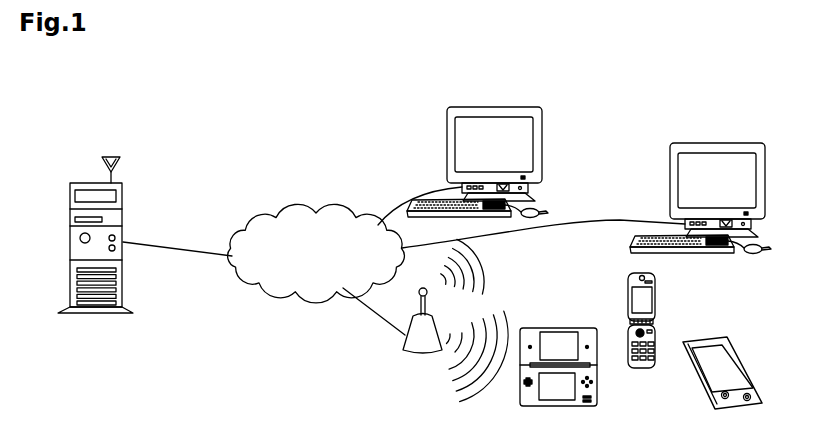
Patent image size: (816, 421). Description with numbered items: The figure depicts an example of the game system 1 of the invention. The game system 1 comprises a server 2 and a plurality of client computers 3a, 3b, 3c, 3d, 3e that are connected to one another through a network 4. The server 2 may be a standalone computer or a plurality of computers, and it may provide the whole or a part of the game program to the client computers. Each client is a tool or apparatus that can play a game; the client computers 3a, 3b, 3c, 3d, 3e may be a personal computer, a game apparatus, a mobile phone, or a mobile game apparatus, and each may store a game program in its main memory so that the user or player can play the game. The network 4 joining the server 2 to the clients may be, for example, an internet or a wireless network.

The game system 1 is at (370, 125).
The server 2 is at (122, 221).
The client computer 3a is at (535, 158).
The client computer 3b is at (753, 193).
The client computer 3c is at (658, 335).
The client computer 3d is at (557, 345).
The client computer 3e is at (738, 380).
The network 4 is at (335, 228).